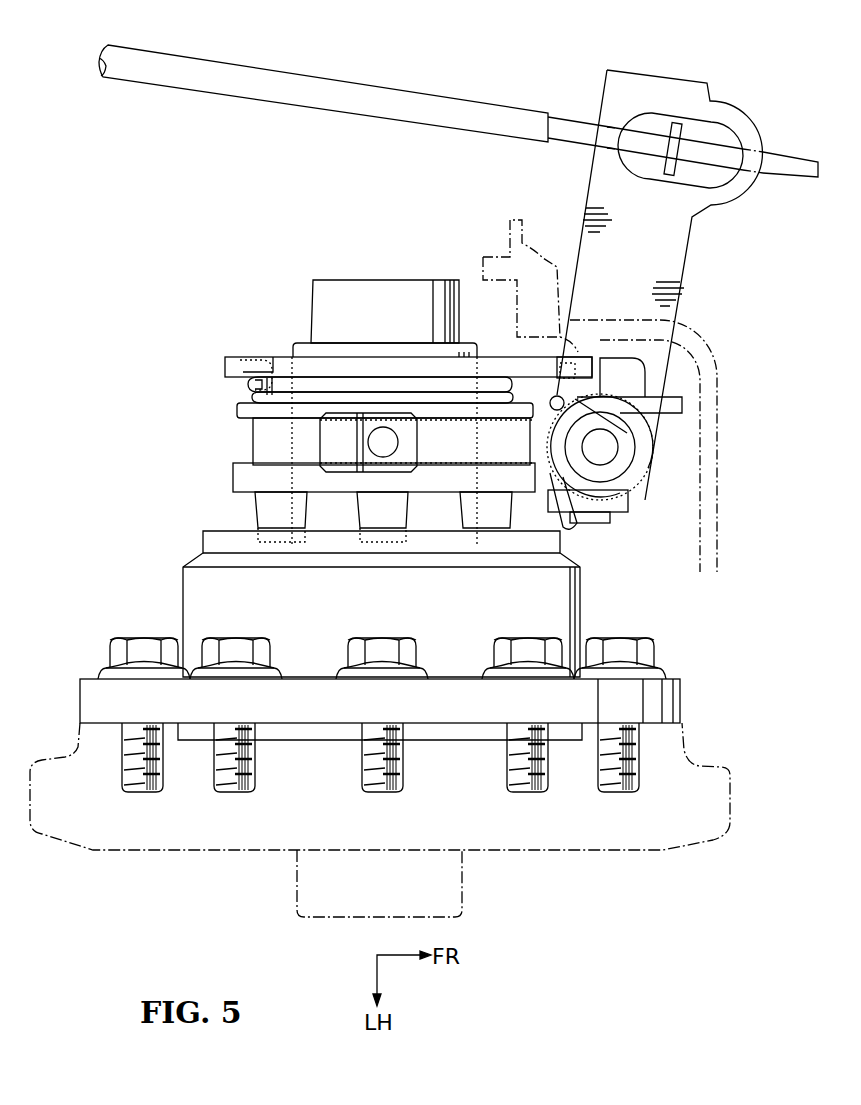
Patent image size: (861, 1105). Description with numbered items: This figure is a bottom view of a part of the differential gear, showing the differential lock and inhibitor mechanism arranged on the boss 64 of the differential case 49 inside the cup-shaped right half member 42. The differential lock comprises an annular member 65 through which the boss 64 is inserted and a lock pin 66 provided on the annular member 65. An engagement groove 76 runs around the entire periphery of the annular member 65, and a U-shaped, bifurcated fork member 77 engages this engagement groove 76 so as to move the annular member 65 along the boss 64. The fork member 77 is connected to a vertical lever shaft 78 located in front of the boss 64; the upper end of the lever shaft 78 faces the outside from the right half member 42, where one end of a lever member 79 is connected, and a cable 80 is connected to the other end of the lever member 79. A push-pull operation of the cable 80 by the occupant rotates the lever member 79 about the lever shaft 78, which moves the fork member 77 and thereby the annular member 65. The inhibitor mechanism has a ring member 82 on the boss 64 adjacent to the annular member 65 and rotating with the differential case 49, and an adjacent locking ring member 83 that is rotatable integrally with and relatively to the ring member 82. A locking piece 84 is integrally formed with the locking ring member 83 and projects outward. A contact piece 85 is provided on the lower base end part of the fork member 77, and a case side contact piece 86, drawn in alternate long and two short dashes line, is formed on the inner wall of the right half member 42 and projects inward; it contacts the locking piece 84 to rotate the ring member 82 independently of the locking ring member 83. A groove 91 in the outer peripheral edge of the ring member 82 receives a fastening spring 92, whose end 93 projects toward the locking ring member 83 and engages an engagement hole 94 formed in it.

The right half member 42 is at (730, 436).
The differential case 49 is at (183, 600).
The boss 64 is at (293, 345).
The annular member 65 is at (237, 412).
The lock pin 66 is at (255, 512).
The engagement groove 76 is at (253, 435).
The fork member 77 is at (437, 450).
The lever shaft 78 is at (618, 490).
The lever member 79 is at (672, 258).
The cable 80 is at (328, 97).
The ring member 82 is at (350, 377).
The locking ring member 83 is at (407, 365).
The locking piece 84 is at (585, 360).
The contact piece 85 is at (630, 370).
The case side contact piece 86 is at (630, 433).
The groove 91 is at (250, 397).
The fastening spring 92 is at (273, 390).
The end 93 is at (248, 387).
The engagement hole 94 is at (242, 353).